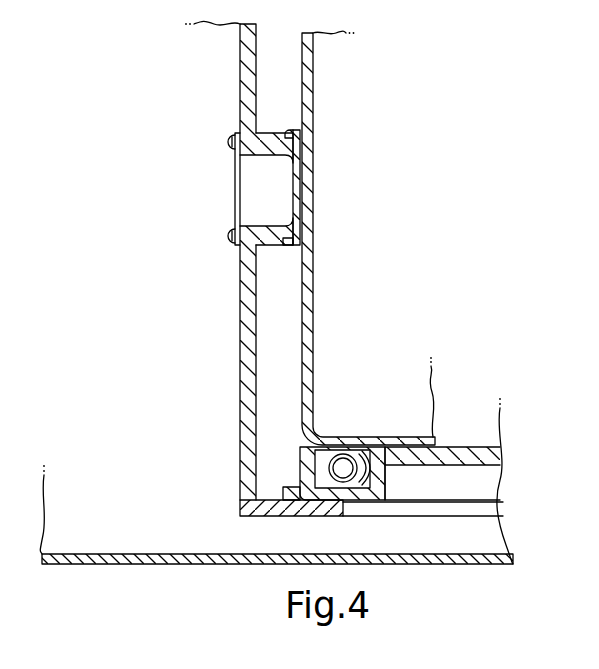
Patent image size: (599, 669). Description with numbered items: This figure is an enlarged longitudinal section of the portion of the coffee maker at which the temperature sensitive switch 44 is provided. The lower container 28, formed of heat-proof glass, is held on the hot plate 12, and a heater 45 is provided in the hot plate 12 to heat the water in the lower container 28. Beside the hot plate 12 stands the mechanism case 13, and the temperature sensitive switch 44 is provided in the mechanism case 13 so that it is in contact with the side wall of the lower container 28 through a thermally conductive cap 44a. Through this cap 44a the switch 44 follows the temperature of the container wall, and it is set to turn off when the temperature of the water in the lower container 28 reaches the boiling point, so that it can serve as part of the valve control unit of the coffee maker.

The hot plate 12 is at (486, 447).
The mechanism case 13 is at (257, 55).
The lower container 28 is at (297, 58).
The temperature sensitive switch 44 is at (262, 210).
The thermally conductive cap 44a is at (298, 131).
The heater 45 is at (344, 463).